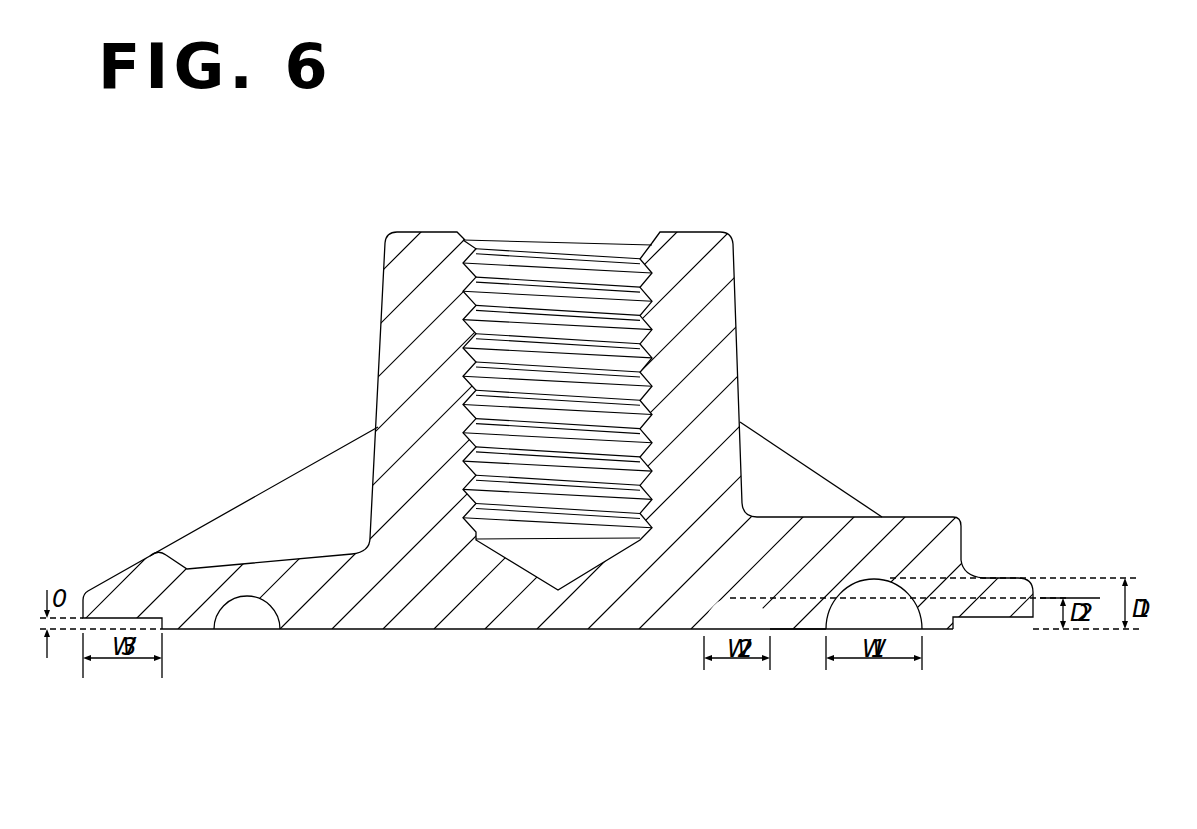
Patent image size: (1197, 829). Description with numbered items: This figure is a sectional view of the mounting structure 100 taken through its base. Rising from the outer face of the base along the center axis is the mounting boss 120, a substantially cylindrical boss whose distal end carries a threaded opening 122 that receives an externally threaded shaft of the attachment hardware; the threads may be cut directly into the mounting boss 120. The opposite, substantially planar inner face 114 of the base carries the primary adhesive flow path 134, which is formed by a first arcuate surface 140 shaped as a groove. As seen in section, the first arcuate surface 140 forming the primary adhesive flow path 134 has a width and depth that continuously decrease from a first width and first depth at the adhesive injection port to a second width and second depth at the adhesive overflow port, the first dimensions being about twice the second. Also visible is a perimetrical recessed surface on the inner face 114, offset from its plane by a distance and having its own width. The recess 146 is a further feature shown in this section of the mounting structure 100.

The mounting structure 100 is at (788, 196).
The mounting boss 120 is at (381, 305).
The threaded opening 122 is at (547, 256).
The inner face 114 is at (458, 631).
The channel recess 146 is at (252, 631).
The first arcuate surface 140 is at (887, 612).
The primary adhesive flow path 134 is at (822, 637).